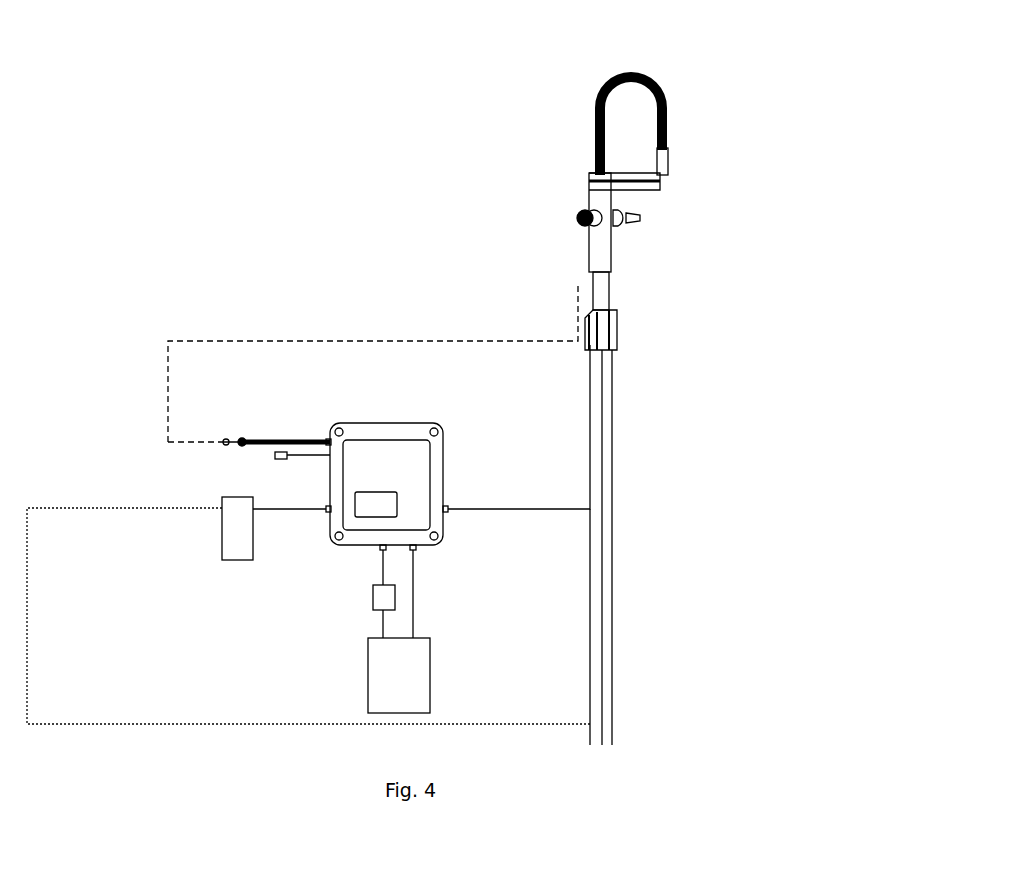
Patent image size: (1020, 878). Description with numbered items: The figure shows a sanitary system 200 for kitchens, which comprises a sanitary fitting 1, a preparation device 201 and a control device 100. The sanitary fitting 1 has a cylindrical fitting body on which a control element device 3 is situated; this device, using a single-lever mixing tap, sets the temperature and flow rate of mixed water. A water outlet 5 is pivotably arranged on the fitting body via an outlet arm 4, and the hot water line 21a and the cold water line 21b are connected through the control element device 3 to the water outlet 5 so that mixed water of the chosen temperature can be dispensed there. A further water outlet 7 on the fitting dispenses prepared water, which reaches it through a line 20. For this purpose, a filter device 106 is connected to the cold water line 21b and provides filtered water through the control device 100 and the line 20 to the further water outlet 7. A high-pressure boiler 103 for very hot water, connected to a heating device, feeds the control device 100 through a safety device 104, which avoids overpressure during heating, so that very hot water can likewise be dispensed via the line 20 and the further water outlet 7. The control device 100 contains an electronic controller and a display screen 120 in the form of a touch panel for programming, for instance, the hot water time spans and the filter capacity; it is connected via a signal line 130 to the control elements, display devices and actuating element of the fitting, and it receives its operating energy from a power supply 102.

The sanitary fitting 1 is at (733, 93).
The sanitary system 200 is at (843, 166).
The preparation device 201 is at (796, 313).
The control element device 3 is at (550, 199).
The outlet arm 4 is at (661, 97).
The water outlet 5 is at (664, 185).
The further water outlet 7 is at (648, 192).
The line 20 is at (521, 503).
The hot water line 21a is at (612, 615).
The cold water line 21b is at (590, 602).
The signal line 130 is at (280, 341).
The control device 100 is at (422, 423).
The display screen 120 is at (358, 514).
The power supply 102 is at (304, 442).
The filter device 106 is at (219, 538).
The safety device 104 is at (370, 602).
The high-pressure boiler 103 is at (376, 679).